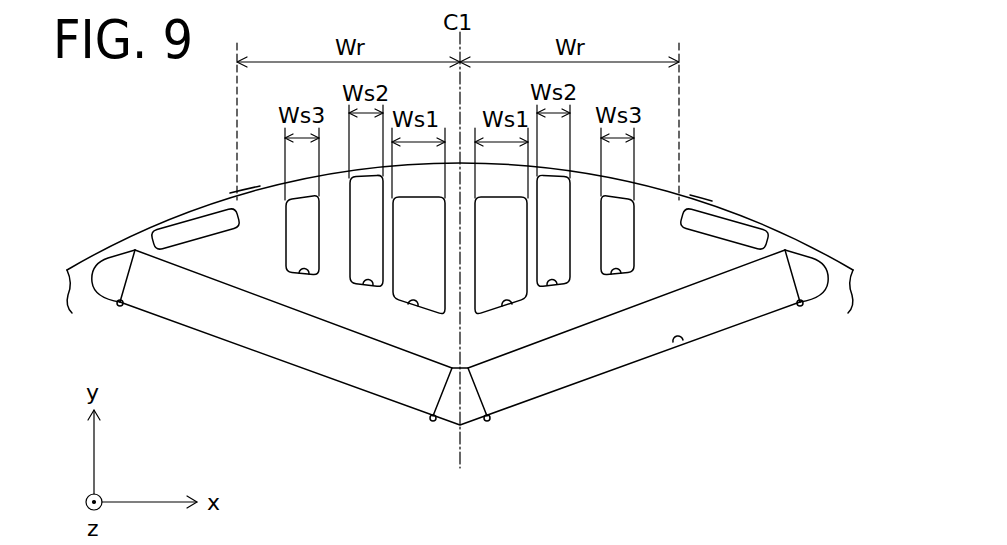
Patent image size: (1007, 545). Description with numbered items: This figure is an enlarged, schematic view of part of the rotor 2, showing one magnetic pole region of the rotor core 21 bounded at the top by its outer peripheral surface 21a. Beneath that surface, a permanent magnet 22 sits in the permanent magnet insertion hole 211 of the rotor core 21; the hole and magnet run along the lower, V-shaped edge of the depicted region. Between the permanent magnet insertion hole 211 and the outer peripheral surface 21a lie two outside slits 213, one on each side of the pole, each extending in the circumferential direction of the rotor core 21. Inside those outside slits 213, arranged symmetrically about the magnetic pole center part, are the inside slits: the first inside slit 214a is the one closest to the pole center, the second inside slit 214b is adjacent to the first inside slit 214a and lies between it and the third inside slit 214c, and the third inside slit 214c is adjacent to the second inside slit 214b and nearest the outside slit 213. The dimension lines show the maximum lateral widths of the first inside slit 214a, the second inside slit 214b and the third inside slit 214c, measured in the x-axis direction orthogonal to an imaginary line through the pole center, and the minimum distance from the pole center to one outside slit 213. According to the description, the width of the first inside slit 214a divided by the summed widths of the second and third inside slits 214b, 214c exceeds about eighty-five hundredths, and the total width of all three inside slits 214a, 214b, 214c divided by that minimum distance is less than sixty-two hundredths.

The rotor 2 is at (95, 200).
The rotor core 21 is at (253, 200).
The outer peripheral surface 21a is at (700, 193).
The permanent magnet 22 is at (207, 317).
The permanent magnet insertion hole 211 is at (678, 343).
The outside slit 213 is at (195, 230).
The first inside slit 214a is at (420, 307).
The second inside slit 214b is at (372, 287).
The third inside slit 214c is at (306, 276).